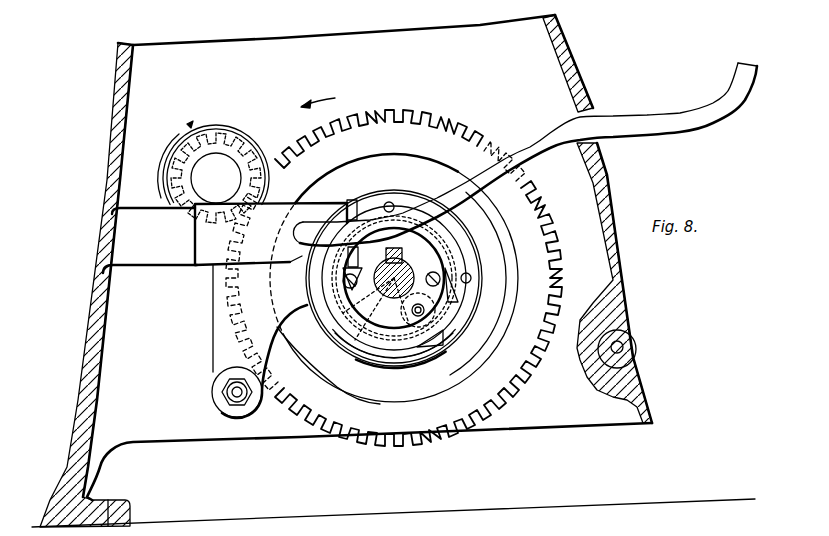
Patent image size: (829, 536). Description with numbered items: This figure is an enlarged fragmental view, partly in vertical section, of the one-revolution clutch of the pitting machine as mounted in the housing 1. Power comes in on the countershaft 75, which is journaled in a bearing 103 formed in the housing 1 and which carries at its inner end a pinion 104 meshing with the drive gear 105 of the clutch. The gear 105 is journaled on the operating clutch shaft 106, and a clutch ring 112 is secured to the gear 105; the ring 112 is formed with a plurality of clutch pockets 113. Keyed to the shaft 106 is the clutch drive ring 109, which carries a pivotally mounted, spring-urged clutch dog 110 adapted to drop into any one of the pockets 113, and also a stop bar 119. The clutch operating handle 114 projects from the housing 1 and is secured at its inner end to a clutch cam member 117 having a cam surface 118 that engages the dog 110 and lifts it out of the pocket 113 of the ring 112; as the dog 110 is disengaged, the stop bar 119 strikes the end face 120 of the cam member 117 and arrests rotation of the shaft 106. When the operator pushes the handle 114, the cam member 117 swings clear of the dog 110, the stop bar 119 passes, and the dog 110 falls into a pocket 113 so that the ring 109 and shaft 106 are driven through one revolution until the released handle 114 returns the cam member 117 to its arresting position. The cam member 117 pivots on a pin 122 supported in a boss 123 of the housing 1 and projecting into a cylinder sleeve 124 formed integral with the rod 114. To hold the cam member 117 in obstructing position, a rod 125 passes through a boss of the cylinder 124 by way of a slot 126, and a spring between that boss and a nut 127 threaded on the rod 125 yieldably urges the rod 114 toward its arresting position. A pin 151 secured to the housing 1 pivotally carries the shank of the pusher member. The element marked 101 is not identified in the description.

The housing 1 is at (584, 52).
The countershaft 75 is at (210, 175).
The bearing arc 101 is at (167, 157).
The bearing 103 is at (208, 125).
The pinion 104 is at (233, 140).
The drive gear 105 is at (456, 126).
The operating clutch shaft 106 is at (468, 270).
The clutch drive ring 109 is at (448, 230).
The clutch dog 110 is at (281, 327).
The clutch ring 112 is at (457, 250).
The clutch pockets 113 is at (427, 253).
The clutch operating handle 114 is at (646, 117).
The clutch cam member 117 is at (427, 340).
The cam surface 118 is at (380, 335).
The stop bar 119 is at (340, 343).
The end face 120 is at (363, 362).
The pin 122 is at (361, 200).
The boss 123 is at (163, 267).
The cylinder sleeve 124 is at (262, 262).
The rod 125 is at (225, 392).
The slot 126 is at (227, 375).
The nut 127 is at (220, 400).
The pin 151 is at (613, 330).